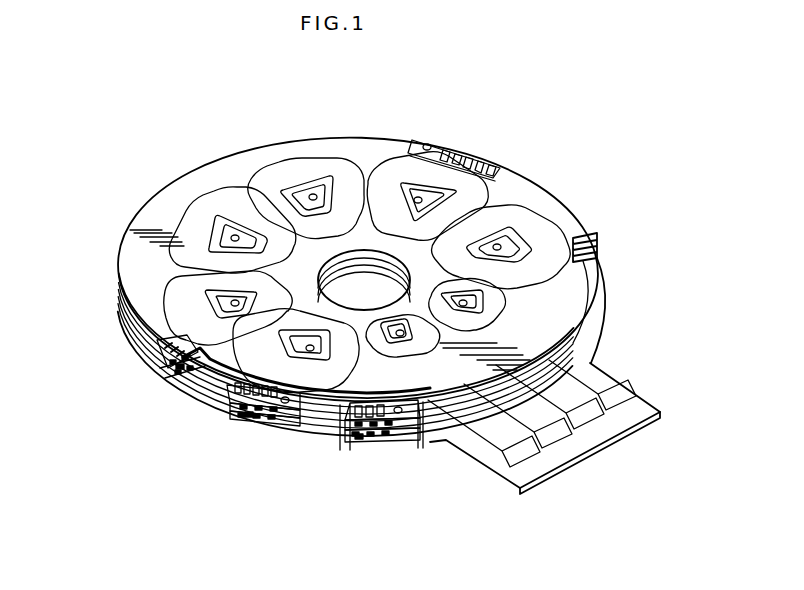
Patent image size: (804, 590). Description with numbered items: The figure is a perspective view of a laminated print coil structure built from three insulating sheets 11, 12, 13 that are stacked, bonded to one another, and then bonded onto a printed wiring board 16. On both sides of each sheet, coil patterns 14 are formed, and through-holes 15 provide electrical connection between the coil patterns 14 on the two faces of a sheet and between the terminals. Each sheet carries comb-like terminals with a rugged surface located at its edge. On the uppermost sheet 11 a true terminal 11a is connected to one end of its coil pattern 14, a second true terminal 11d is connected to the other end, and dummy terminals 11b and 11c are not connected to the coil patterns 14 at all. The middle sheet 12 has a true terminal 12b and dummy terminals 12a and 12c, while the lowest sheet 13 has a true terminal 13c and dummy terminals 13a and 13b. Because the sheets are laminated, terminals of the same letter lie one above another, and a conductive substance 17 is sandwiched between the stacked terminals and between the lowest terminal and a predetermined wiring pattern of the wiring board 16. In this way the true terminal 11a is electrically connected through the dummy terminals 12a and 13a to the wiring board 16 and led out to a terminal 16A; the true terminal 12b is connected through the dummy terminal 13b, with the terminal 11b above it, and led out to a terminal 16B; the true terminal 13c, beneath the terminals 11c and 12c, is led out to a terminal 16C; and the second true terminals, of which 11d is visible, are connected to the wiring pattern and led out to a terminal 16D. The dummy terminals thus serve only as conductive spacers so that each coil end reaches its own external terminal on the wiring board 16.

The insulating sheet 11 is at (463, 413).
The insulating sheet 12 is at (450, 430).
The insulating sheet 13 is at (440, 447).
The coil patterns 14 is at (255, 180).
The through-holes 15 is at (427, 144).
The printed wiring board 16 is at (600, 313).
The terminal 16A is at (602, 428).
The terminal 16B is at (570, 445).
The terminal 16C is at (538, 466).
The terminal 16D is at (634, 410).
The conductive substance 17 is at (183, 367).
The true terminal 11a is at (165, 345).
The dummy terminal 11b is at (217, 405).
The dummy terminal 11c is at (345, 410).
The second true terminal 11d is at (505, 168).
The dummy terminal 12a is at (172, 357).
The true terminal 12b is at (227, 423).
The dummy terminal 12c is at (350, 432).
The dummy terminal 13a is at (178, 367).
The dummy terminal 13b is at (233, 433).
The true terminal 13c is at (365, 445).